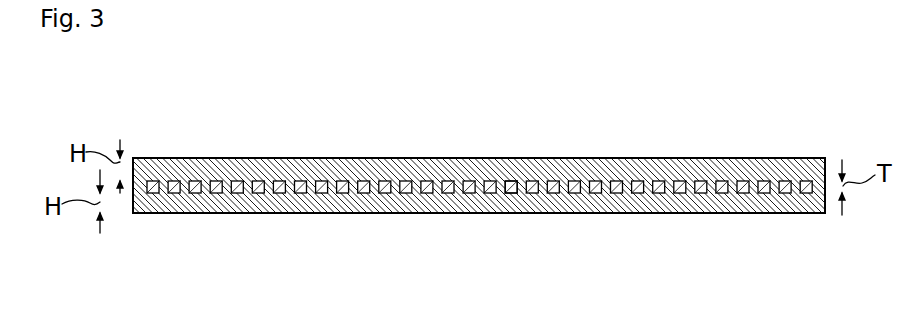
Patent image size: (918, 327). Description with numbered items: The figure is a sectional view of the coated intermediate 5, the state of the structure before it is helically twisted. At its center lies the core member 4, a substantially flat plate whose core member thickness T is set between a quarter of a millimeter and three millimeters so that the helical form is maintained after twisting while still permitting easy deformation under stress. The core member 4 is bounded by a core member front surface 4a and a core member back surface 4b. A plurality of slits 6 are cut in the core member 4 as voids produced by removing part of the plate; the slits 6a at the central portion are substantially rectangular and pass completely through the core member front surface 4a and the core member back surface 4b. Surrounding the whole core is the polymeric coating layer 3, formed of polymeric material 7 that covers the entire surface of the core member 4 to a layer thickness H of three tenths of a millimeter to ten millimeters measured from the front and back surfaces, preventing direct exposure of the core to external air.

The coated intermediate 5 is at (368, 122).
The polymeric coating layer 3 is at (479, 224).
The polymeric material 7 is at (193, 213).
The core member 4 is at (479, 189).
The core member front surface 4a is at (513, 181).
The core member back surface 4b is at (512, 193).
The slits at the central portion 6a is at (424, 147).
The slits 6 is at (442, 181).